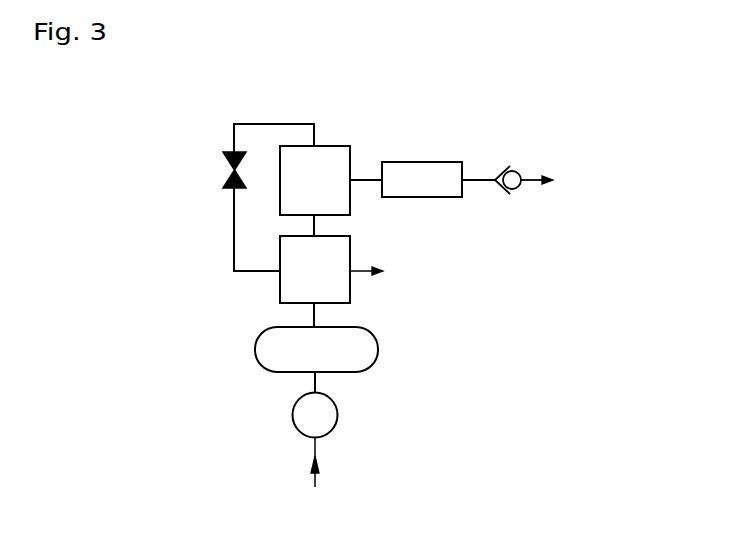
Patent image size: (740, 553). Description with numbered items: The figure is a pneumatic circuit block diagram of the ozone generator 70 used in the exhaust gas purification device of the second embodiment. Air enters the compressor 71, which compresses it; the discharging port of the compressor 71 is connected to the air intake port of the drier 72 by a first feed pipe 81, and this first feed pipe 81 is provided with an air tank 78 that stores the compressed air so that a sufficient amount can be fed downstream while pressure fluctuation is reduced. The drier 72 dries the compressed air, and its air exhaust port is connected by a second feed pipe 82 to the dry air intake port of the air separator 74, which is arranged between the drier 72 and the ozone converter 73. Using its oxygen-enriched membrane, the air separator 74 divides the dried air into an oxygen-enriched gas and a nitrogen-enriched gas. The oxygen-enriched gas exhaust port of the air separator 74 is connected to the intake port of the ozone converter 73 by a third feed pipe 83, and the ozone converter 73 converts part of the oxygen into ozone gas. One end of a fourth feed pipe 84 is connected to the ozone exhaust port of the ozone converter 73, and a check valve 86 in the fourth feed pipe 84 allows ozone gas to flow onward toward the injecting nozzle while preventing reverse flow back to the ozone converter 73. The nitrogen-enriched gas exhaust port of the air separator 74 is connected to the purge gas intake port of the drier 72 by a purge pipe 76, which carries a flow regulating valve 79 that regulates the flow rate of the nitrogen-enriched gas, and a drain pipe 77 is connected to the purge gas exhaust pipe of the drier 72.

The ozone generator 70 is at (168, 126).
The compressor 71 is at (340, 417).
The drier 72 is at (350, 302).
The ozone converter 73 is at (418, 162).
The air separator 74 is at (350, 215).
The purge pipe 76 is at (234, 240).
The drain pipe 77 is at (362, 268).
The air tank 78 is at (378, 347).
The flow regulating valve 79 is at (224, 171).
The first feed pipe 81 is at (315, 388).
The second feed pipe 82 is at (313, 224).
The third feed pipe 83 is at (362, 180).
The fourth feed pipe 84 is at (478, 182).
The check valve 86 is at (502, 168).